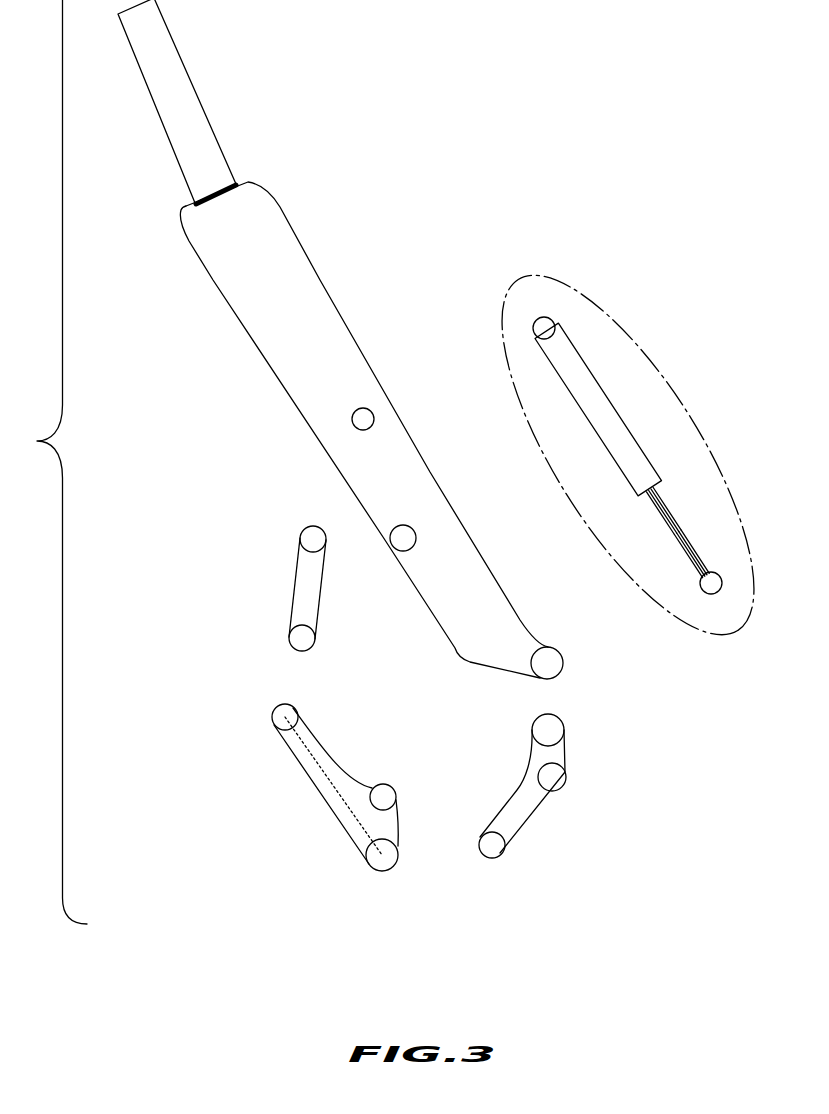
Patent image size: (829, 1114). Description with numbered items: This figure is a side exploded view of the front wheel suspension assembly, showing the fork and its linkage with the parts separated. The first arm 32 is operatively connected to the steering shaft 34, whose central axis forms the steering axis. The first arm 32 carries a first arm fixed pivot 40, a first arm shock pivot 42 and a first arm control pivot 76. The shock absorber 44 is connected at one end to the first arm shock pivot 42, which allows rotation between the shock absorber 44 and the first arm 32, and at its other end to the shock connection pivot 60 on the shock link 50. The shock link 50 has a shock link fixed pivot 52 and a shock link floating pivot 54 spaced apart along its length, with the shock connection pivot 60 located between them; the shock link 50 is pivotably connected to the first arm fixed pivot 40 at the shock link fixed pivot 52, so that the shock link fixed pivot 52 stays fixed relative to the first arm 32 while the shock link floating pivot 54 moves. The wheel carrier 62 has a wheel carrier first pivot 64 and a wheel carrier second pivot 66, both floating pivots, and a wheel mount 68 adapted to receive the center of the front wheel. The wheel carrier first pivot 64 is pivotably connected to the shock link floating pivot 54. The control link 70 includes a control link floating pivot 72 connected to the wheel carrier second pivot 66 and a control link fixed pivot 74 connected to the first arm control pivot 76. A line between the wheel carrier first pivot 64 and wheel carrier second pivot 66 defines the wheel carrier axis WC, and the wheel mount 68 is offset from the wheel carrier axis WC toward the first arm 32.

The first arm 32 is at (302, 274).
The steering shaft 34 is at (197, 154).
The first arm fixed pivot 40 is at (552, 663).
The first arm shock pivot 42 is at (363, 417).
The shock absorber 44 is at (538, 270).
The shock link 50 is at (543, 804).
The shock link fixed pivot 52 is at (553, 725).
The shock link floating pivot 54 is at (495, 850).
The shock connection pivot 60 is at (558, 776).
The wheel carrier 62 is at (331, 789).
The wheel carrier first pivot 64 is at (387, 860).
The wheel carrier second pivot 66 is at (290, 725).
The wheel mount 68 is at (385, 793).
The control link 70 is at (285, 574).
The control link floating pivot 72 is at (302, 639).
The control link fixed pivot 74 is at (309, 538).
The first arm control pivot 76 is at (401, 545).
The wheel carrier axis WC is at (312, 760).